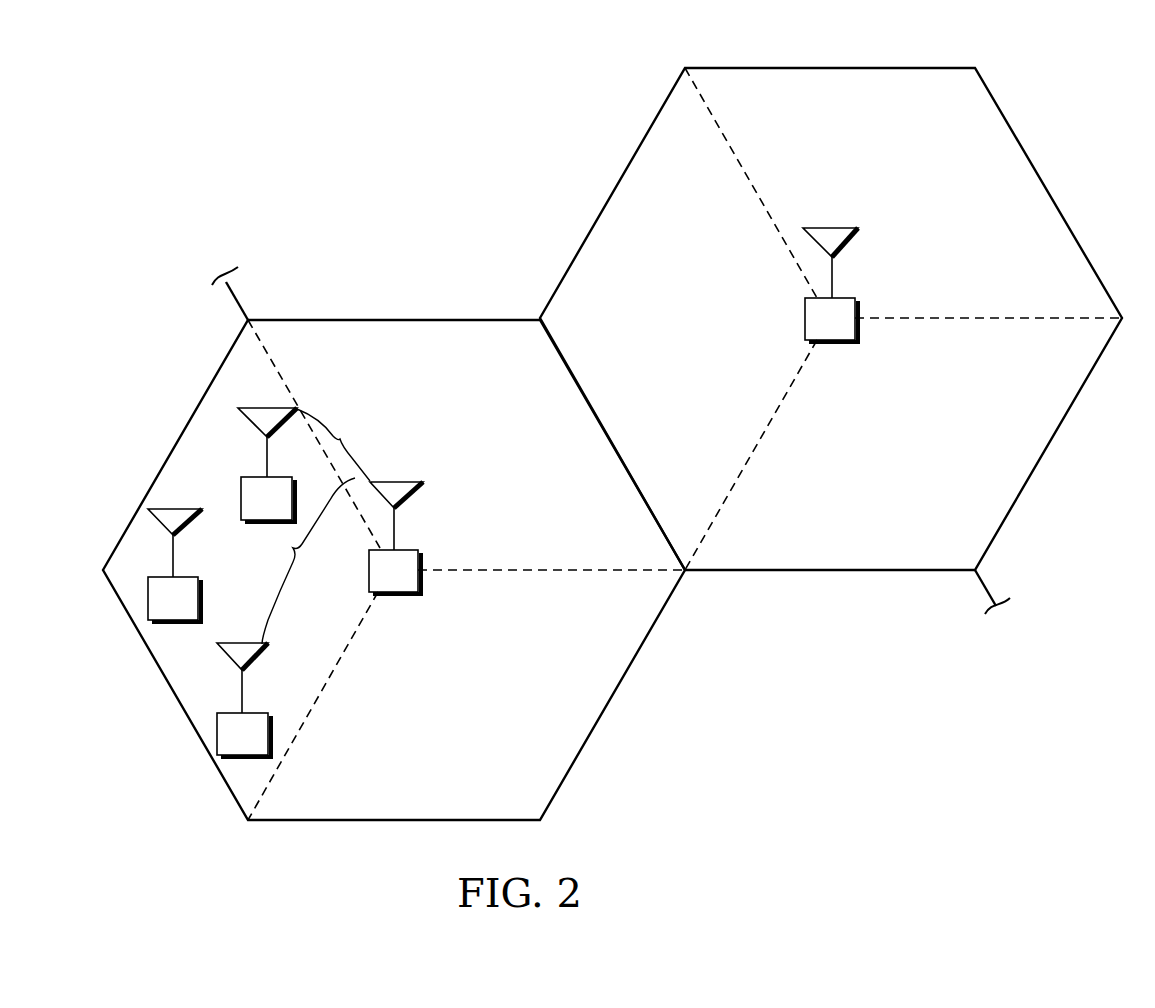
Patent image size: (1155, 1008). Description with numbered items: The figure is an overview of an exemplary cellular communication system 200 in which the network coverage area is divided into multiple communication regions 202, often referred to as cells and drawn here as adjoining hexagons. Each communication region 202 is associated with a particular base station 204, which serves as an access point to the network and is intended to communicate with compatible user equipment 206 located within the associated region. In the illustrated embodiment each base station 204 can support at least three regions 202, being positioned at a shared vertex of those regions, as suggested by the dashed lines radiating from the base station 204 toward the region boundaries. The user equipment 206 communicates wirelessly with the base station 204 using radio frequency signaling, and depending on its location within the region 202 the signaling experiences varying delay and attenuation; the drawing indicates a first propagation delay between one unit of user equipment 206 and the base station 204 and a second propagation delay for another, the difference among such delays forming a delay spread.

The cellular communication system 200 is at (191, 170).
The communication region 202 is at (212, 416).
The base station 204 is at (397, 593).
The user equipment 206 is at (241, 497).